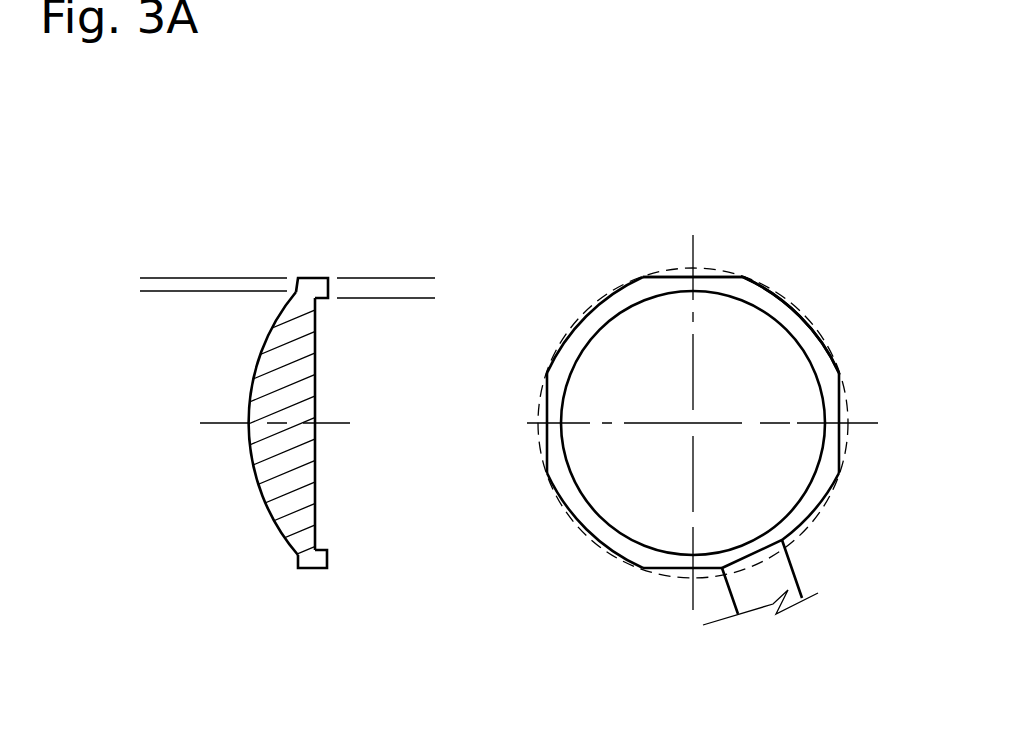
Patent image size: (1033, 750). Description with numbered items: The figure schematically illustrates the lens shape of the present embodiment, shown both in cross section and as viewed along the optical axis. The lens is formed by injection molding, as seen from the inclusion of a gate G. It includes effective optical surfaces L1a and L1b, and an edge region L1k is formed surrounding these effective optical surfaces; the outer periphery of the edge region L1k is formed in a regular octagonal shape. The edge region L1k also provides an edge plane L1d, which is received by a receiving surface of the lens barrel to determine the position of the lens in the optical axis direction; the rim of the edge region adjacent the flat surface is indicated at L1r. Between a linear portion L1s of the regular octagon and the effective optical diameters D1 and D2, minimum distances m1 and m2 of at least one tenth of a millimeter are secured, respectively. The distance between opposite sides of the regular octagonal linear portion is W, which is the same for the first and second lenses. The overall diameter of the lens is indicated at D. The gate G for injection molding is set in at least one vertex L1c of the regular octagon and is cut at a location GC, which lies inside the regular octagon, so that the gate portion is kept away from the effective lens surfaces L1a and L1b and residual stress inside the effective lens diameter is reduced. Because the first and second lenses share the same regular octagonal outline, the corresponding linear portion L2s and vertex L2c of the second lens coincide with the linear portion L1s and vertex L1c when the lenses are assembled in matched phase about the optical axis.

The minimum distance m1 is at (150, 278).
The minimum distance m2 is at (422, 278).
The edge region L1k is at (311, 285).
The effective optical surface L1a is at (264, 346).
The effective optical surface L1b is at (322, 398).
The lens rim / flange edge L1r is at (320, 548).
The effective optical diameter D1 is at (290, 555).
The effective optical diameter D2 is at (422, 298).
The distance between opposite sides W is at (548, 142).
The linear portion L1s is at (685, 277).
The linear portion L2s is at (670, 246).
The vertex L1c is at (750, 277).
The vertex L2c is at (791, 306).
The lens effective/outer diameter D is at (540, 531).
The edge plane L1d is at (828, 372).
The gate cut location GC is at (784, 542).
The gate G is at (792, 598).